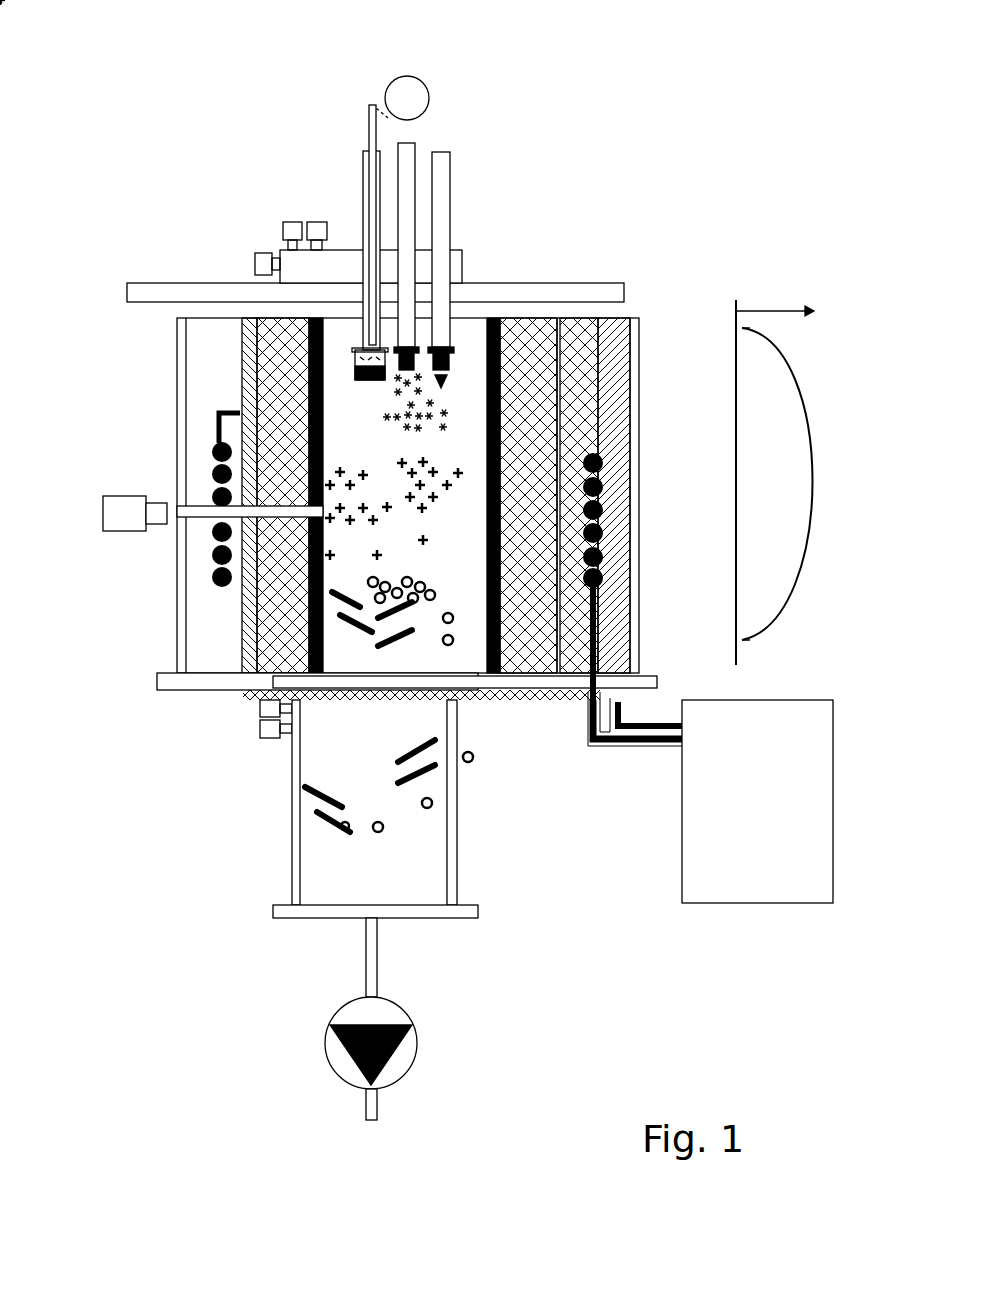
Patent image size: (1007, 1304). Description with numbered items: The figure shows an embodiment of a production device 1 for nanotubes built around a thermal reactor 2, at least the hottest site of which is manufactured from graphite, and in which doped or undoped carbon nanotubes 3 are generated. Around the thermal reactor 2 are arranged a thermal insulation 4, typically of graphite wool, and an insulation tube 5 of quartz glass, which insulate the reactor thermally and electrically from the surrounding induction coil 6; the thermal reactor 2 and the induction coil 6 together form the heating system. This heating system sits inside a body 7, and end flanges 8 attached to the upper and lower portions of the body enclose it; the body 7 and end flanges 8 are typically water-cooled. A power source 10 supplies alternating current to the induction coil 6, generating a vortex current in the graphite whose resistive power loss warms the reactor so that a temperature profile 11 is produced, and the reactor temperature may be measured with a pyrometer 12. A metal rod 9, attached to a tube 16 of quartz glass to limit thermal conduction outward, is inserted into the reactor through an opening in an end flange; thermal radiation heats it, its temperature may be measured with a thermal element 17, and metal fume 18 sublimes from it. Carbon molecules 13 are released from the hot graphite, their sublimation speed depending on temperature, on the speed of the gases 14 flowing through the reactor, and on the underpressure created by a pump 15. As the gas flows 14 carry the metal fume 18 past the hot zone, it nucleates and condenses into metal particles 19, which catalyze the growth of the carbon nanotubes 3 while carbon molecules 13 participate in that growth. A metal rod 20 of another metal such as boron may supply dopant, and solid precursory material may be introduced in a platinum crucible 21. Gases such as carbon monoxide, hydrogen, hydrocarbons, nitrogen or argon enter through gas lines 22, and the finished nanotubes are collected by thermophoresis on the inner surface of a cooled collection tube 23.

The production device 1 is at (622, 245).
The thermal reactor 2 is at (240, 590).
The nanotubes 3 is at (460, 712).
The thermal insulation 4 is at (537, 320).
The insulation tube 5 is at (580, 320).
The induction coil 6 is at (602, 585).
The body 7 is at (147, 410).
The end flanges 8 is at (113, 290).
The metal rod 9 is at (575, 405).
The power source 10 is at (658, 880).
The temperature profile 11 is at (790, 296).
The pyrometer 12 is at (100, 512).
The carbon molecules 13 is at (634, 736).
The gases 14 is at (280, 320).
The pump 15 is at (316, 1051).
The tube 16 is at (435, 73).
The thermal element 17 is at (368, 100).
The metal fume 18 is at (455, 367).
The metal particles 19 is at (490, 640).
The metal rod 20 is at (622, 318).
The platinum crucible 21 is at (345, 352).
The gas lines 22 is at (347, 235).
The collection tube 23 is at (280, 898).